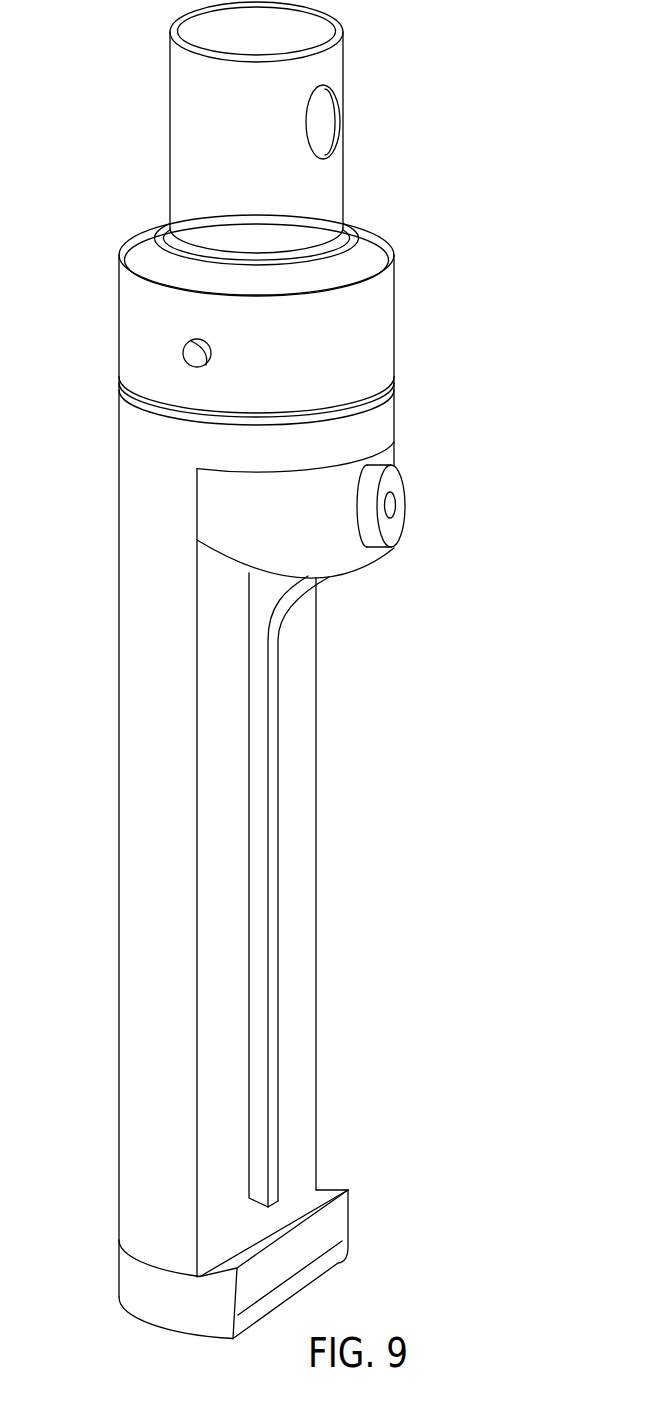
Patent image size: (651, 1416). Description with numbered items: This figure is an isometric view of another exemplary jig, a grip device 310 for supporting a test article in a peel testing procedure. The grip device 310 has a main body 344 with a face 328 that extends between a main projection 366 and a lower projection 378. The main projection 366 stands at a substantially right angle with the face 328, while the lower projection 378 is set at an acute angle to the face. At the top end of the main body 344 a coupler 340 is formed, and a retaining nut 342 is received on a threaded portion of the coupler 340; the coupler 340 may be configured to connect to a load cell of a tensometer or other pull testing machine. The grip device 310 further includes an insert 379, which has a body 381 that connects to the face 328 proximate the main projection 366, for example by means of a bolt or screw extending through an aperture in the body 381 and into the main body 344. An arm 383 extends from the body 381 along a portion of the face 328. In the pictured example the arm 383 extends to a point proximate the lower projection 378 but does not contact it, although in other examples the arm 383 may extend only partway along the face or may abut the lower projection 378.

The grip device 310 is at (420, 62).
The coupler 340 is at (193, 128).
The retaining nut 342 is at (378, 315).
The main projection 366 is at (378, 425).
The main body 344 is at (127, 533).
The body 381 is at (215, 515).
The insert 379 is at (357, 557).
The face 328 is at (300, 801).
The arm 383 is at (277, 922).
The lower projection 378 is at (338, 1215).